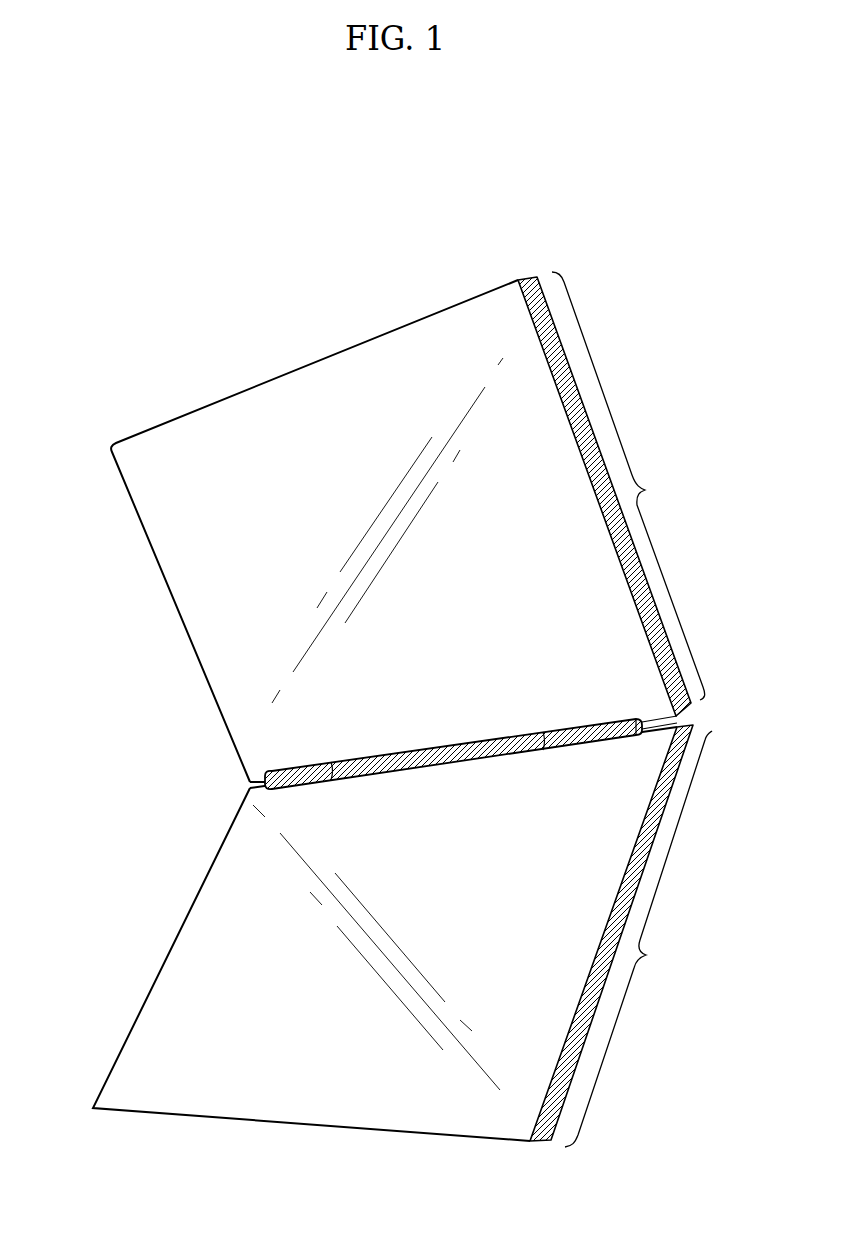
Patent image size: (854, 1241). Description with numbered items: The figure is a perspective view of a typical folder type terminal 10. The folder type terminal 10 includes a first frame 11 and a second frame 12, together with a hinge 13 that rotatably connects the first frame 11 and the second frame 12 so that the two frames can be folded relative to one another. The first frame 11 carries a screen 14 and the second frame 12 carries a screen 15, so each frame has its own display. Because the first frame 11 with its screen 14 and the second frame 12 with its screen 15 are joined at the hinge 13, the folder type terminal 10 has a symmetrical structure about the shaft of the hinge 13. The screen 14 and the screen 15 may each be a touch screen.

The folder type terminal 10 is at (667, 220).
The first frame 11 is at (611, 494).
The second frame 12 is at (621, 936).
The hinge 13 is at (250, 798).
The screen 14 is at (191, 592).
The screen 15 is at (218, 905).